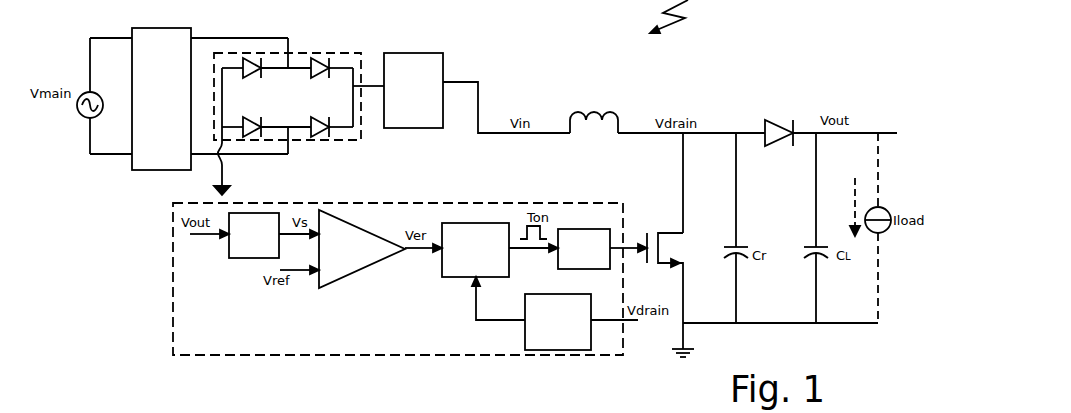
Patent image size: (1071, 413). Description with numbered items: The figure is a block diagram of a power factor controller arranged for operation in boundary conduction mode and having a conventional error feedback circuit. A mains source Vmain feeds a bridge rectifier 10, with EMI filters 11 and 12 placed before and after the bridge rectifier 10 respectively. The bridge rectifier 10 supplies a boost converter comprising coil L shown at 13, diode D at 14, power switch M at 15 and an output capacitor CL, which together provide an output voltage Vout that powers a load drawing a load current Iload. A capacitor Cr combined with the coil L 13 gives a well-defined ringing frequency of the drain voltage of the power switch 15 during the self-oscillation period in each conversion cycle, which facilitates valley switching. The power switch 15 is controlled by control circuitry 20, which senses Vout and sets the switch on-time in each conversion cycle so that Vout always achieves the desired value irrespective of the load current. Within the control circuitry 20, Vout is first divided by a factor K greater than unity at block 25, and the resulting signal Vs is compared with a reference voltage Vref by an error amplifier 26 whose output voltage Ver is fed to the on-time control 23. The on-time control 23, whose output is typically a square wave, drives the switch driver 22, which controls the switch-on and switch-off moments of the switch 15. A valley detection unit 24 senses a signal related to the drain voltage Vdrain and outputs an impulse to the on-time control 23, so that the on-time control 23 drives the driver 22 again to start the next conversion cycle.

The bridge rectifier 10 is at (298, 114).
The EMI filter 11 is at (174, 114).
The EMI filter 12 is at (428, 87).
The coil L 13 is at (568, 110).
The diode D 14 is at (766, 126).
The power switch M 15 is at (671, 228).
The control circuitry 20 is at (216, 347).
The switch driver 22 is at (601, 261).
The on-time control 23 is at (491, 264).
The valley detection unit 24 is at (571, 337).
The divider block 25 is at (268, 247).
The error amplifier 26 is at (363, 261).